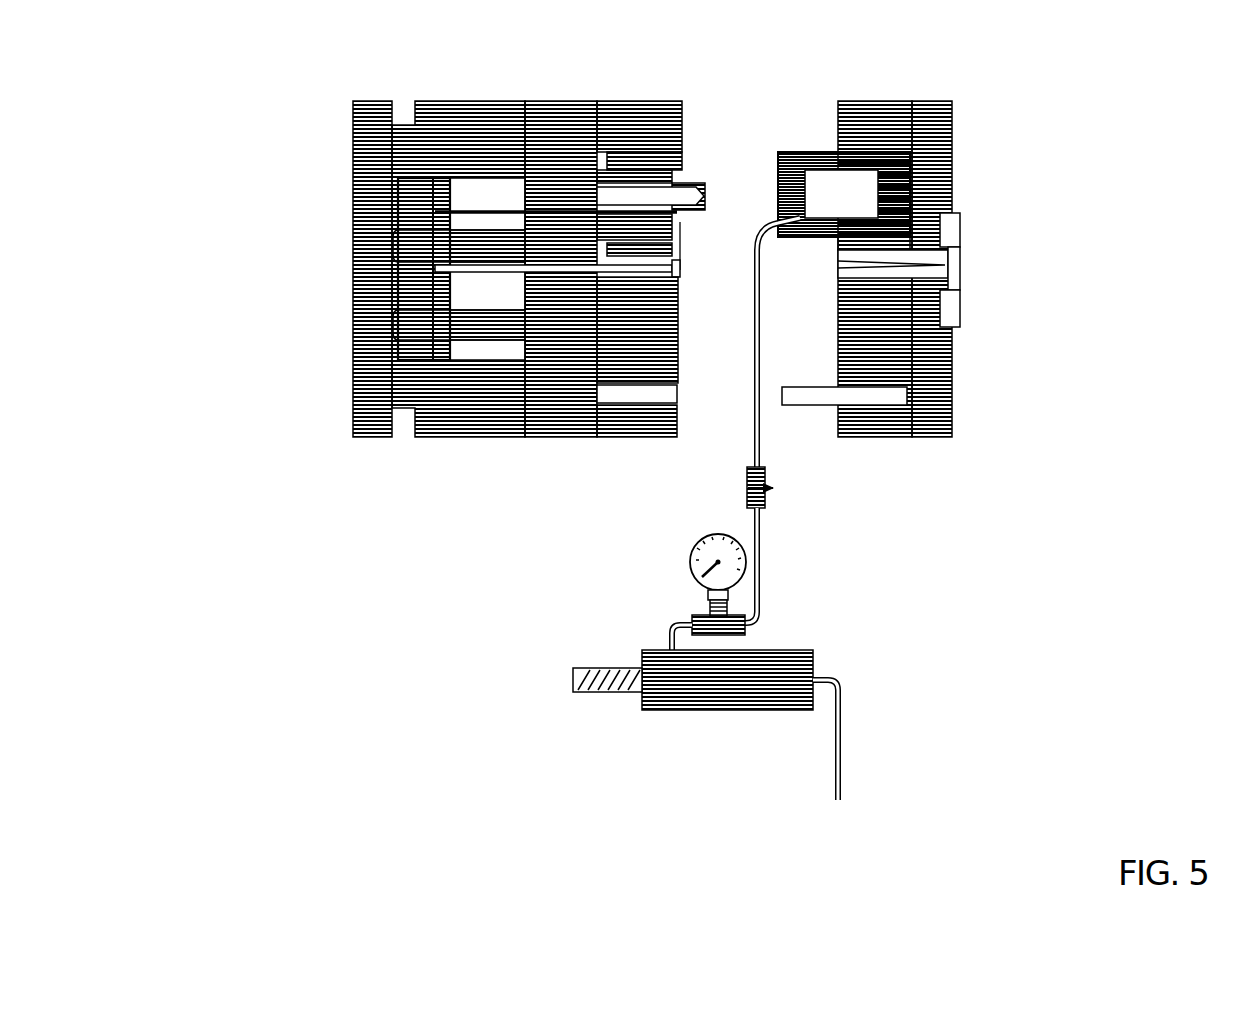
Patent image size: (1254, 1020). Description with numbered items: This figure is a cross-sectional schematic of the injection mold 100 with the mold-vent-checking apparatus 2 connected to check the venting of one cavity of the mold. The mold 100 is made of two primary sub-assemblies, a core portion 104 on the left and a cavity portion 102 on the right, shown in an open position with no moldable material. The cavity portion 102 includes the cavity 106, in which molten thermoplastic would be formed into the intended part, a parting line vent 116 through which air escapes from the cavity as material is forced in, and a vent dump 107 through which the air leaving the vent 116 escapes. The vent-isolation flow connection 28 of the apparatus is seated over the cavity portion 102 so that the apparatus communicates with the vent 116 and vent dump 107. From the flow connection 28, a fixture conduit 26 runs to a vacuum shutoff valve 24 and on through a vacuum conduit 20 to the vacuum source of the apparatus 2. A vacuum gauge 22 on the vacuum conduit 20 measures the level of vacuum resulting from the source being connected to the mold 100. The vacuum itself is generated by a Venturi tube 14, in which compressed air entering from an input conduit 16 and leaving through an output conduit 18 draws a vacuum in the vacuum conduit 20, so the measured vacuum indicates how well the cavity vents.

The injection mold 100 is at (358, 87).
The core portion 104 is at (322, 171).
The cavity portion 102 is at (985, 150).
The vent dump 107 is at (838, 132).
The vent-isolation flow connection 28 is at (778, 161).
The cavity 106 is at (900, 178).
The parting line vent 116 is at (836, 238).
The fixture conduit 26 is at (759, 418).
The vacuum shutoff valve 24 is at (767, 499).
The vacuum conduit 20 is at (762, 565).
The vacuum gauge 22 is at (704, 554).
The mold-vent-checking apparatus 2 is at (920, 594).
The Venturi tube 14 is at (720, 694).
The output conduit 18 is at (592, 692).
The input conduit 16 is at (843, 741).